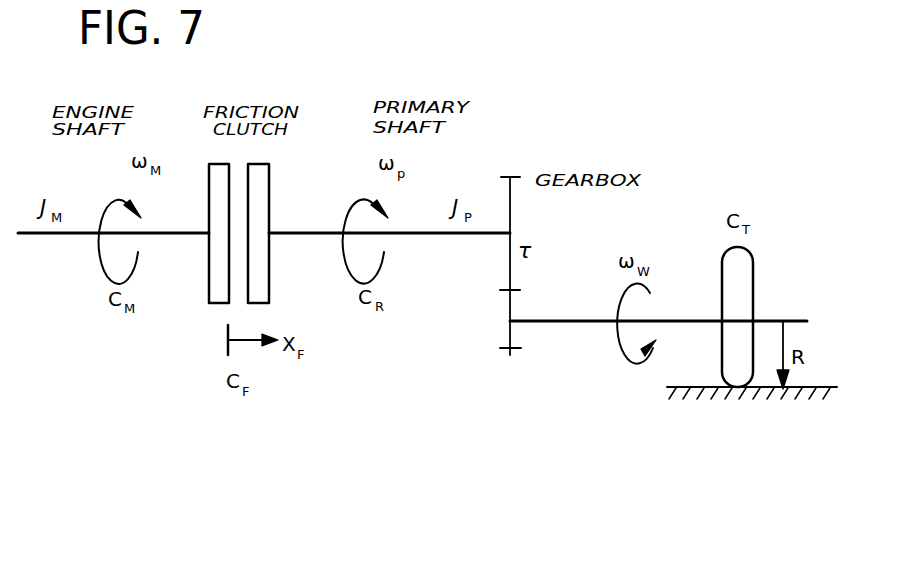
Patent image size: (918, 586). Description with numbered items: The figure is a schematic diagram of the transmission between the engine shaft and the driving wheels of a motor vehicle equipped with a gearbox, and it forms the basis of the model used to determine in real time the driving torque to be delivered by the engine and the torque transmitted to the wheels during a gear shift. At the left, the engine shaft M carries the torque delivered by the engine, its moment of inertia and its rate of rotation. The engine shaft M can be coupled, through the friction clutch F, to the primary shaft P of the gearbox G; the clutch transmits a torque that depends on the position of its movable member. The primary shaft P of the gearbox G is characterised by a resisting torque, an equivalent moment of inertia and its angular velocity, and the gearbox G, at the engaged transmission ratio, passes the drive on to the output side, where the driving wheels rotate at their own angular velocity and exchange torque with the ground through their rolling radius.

The engine shaft M is at (62, 238).
The friction clutch F is at (203, 328).
The primary shaft P is at (311, 236).
The gearbox G is at (483, 312).